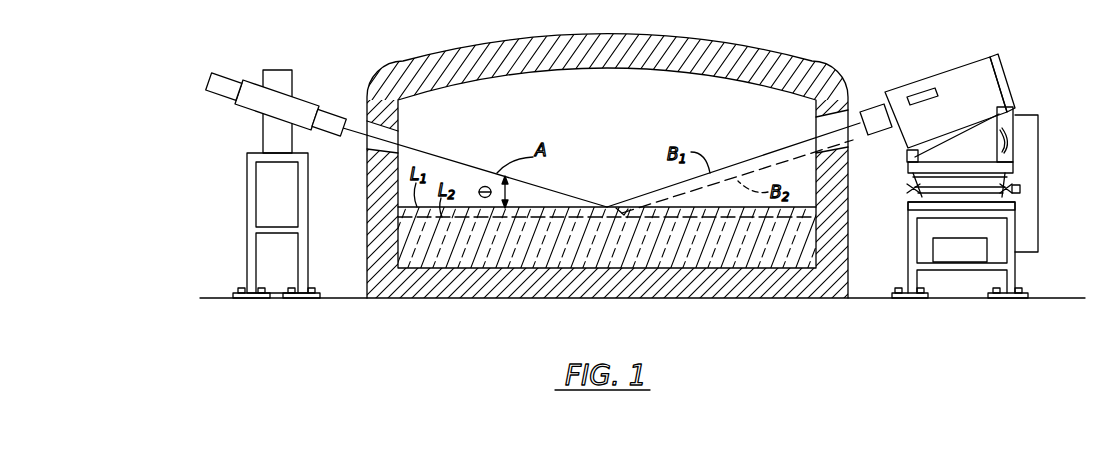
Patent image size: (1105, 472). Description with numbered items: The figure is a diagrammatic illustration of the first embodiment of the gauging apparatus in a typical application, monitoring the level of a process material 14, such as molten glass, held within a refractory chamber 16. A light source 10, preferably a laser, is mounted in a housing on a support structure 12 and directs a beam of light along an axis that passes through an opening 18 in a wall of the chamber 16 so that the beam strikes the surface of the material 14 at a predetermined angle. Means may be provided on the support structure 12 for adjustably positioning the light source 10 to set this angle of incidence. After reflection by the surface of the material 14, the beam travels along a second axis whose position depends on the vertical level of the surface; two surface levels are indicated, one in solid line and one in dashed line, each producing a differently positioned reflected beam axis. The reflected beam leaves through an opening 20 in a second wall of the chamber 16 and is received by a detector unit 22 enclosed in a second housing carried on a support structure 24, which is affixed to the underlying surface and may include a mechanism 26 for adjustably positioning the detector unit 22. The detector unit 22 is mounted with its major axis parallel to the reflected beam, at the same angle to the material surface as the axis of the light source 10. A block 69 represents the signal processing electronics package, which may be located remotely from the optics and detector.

The light source 10 is at (303, 99).
The support structure 12 is at (247, 185).
The process material 14 is at (543, 257).
The refractory chamber 16 is at (366, 246).
The opening 18 is at (407, 134).
The opening 20 is at (809, 131).
The detector unit 22 is at (950, 82).
The support structure 24 is at (1018, 242).
The mechanism 26 is at (1017, 146).
The signal processing electronics package 69 is at (968, 253).